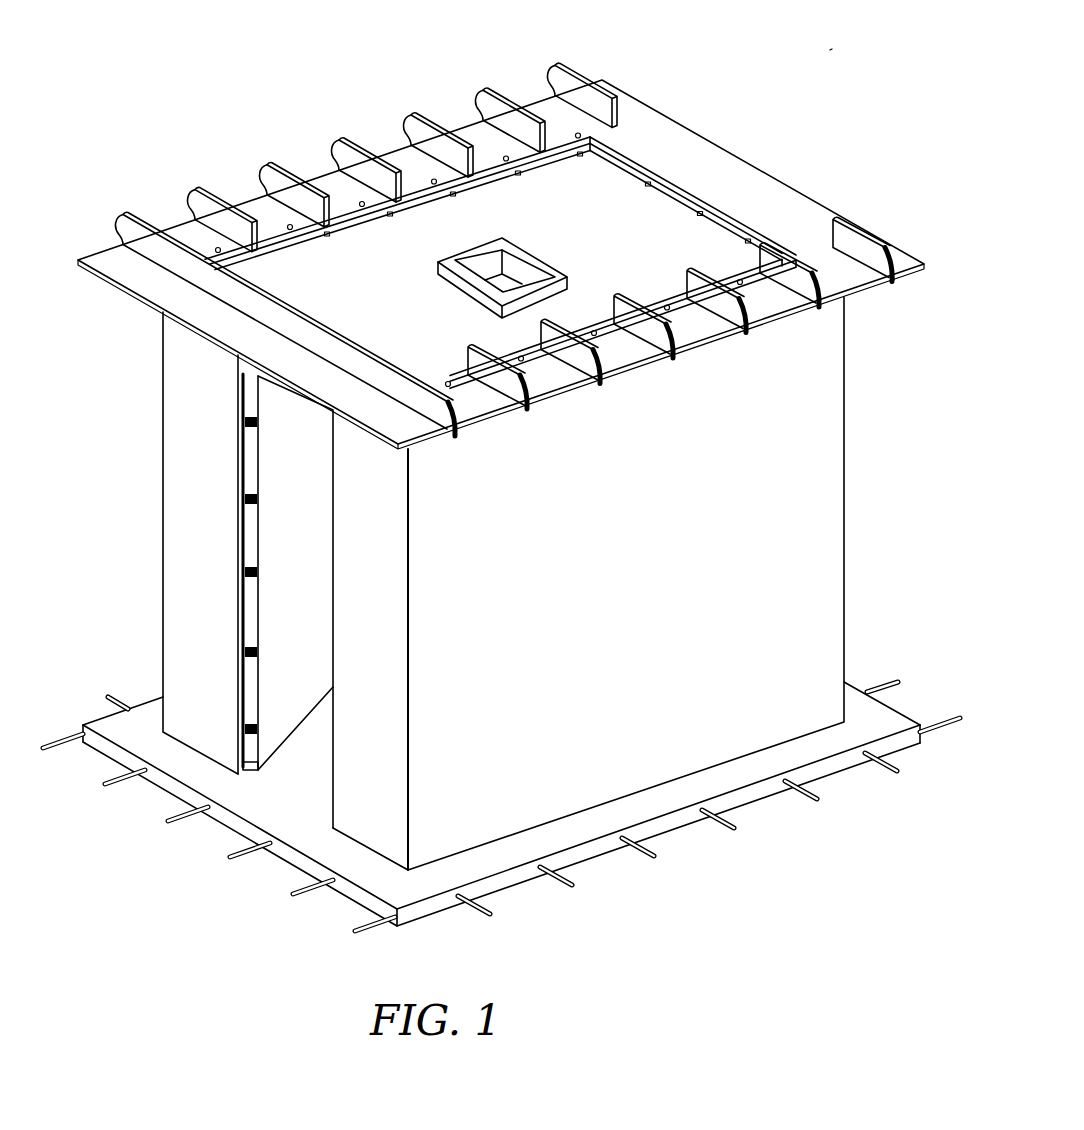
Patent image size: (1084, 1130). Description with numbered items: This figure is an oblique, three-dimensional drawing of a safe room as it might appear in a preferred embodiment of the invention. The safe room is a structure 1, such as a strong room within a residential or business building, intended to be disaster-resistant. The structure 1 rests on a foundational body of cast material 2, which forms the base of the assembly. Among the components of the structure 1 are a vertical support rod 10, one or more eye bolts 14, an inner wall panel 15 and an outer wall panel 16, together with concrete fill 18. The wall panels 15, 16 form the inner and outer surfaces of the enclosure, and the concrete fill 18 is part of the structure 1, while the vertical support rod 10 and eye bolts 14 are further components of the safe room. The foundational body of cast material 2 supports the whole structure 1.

The structure 1 is at (834, 45).
The foundational body of cast material 2 is at (877, 710).
The vertical support rod 10 is at (593, 121).
The eye bolt 14 is at (557, 128).
The inner wall panel 15 is at (307, 523).
The outer wall panel 16 is at (822, 484).
The concrete fill 18 is at (710, 238).